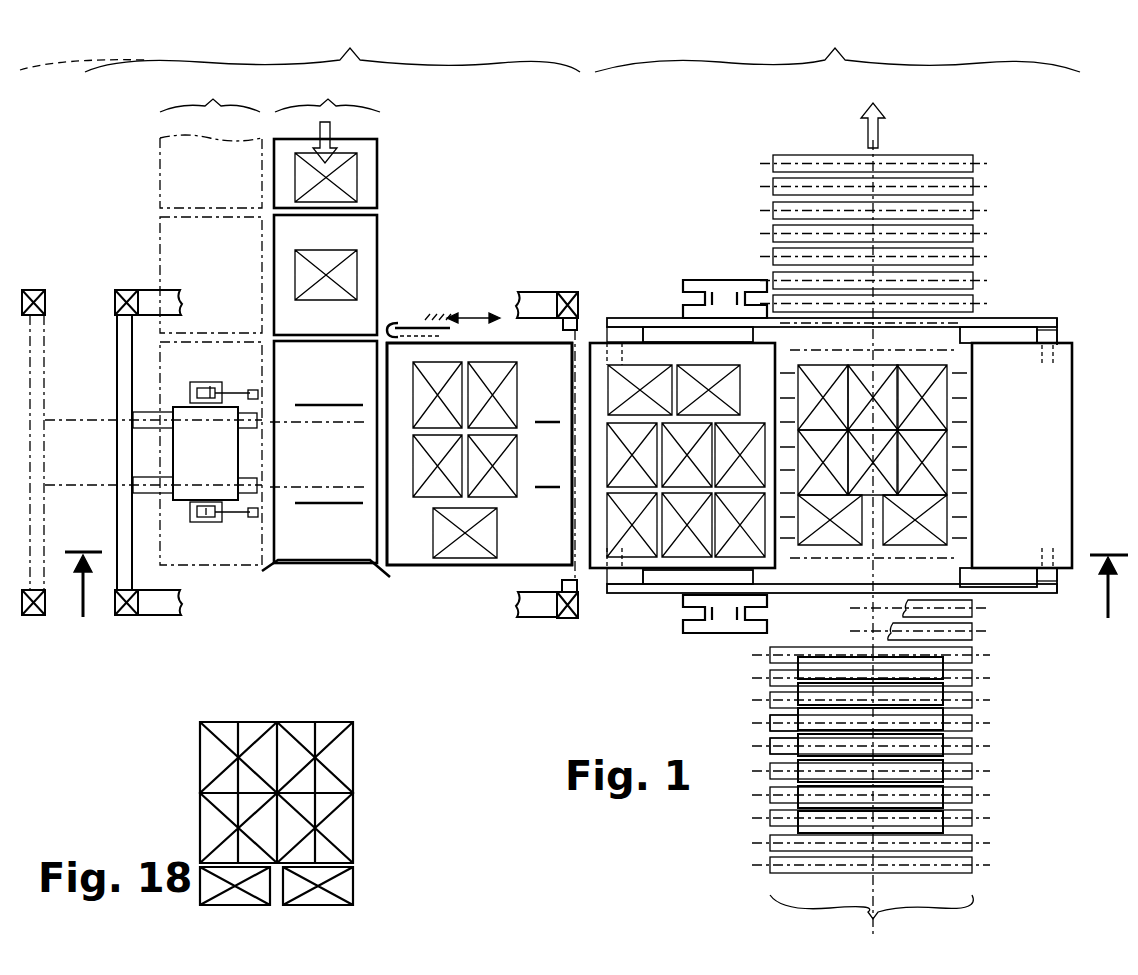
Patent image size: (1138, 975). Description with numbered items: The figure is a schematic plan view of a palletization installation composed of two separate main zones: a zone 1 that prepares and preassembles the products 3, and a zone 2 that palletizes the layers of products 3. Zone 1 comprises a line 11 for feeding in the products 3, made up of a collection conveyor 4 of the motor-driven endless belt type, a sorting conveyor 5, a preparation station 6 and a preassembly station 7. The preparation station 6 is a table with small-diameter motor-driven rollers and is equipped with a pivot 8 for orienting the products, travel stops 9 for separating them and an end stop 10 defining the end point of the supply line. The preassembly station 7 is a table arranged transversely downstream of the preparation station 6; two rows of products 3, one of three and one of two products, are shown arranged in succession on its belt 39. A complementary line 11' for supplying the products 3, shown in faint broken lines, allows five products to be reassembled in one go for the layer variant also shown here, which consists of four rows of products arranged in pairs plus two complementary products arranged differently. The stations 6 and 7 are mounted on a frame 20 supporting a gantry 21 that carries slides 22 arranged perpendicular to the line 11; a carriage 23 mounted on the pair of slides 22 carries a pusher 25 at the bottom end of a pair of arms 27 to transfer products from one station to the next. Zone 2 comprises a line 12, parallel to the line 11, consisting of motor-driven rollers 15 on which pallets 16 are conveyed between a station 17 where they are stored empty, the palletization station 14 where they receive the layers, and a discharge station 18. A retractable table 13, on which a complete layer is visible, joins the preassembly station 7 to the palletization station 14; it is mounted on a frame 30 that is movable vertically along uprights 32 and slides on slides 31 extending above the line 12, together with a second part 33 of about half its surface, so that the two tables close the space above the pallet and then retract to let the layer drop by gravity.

In FIG. 1, the zone 1 is at (300, 48).
In FIG. 1, the zone 2 is at (595, 321).
In FIG. 1, the products 3 is at (357, 160).
In FIG. 18, the products 3 is at (355, 765).
In FIG. 1, the conveyor 4 is at (382, 182).
In FIG. 1, the sorting conveyor 5 is at (382, 233).
In FIG. 1, the preparation station 6 is at (322, 530).
In FIG. 1, the preassembly station 7 is at (472, 585).
In FIG. 1, the pivot 8 is at (397, 326).
In FIG. 1, the travel stops 9 is at (350, 406).
In FIG. 1, the end stop 10 is at (350, 560).
In FIG. 1, the line 11 is at (327, 95).
In FIG. 1, the complementary line 11' is at (211, 321).
In FIG. 1, the line 12 is at (871, 921).
In FIG. 1, the retractable table 13 is at (598, 342).
In FIG. 1, the palletization station 14 is at (957, 447).
In FIG. 1, the motor-driven rollers 15 is at (778, 752).
In FIG. 1, the pallets 16 is at (805, 800).
In FIG. 1, the station 17 is at (1008, 608).
In FIG. 1, the discharge station 18 is at (1005, 160).
In FIG. 1, the frame 20 is at (172, 292).
In FIG. 1, the gantry 21 is at (125, 290).
In FIG. 1, the slides 22 is at (148, 480).
In FIG. 1, the carriage 23 is at (215, 452).
In FIG. 1, the pusher 25 is at (253, 518).
In FIG. 1, the arms 27 is at (258, 392).
In FIG. 1, the frame 30 is at (638, 318).
In FIG. 1, the slides 31 is at (1050, 330).
In FIG. 1, the uprights 32 is at (725, 280).
In FIG. 1, the second part 33 is at (1050, 503).
In FIG. 1, the belt 39 is at (405, 555).